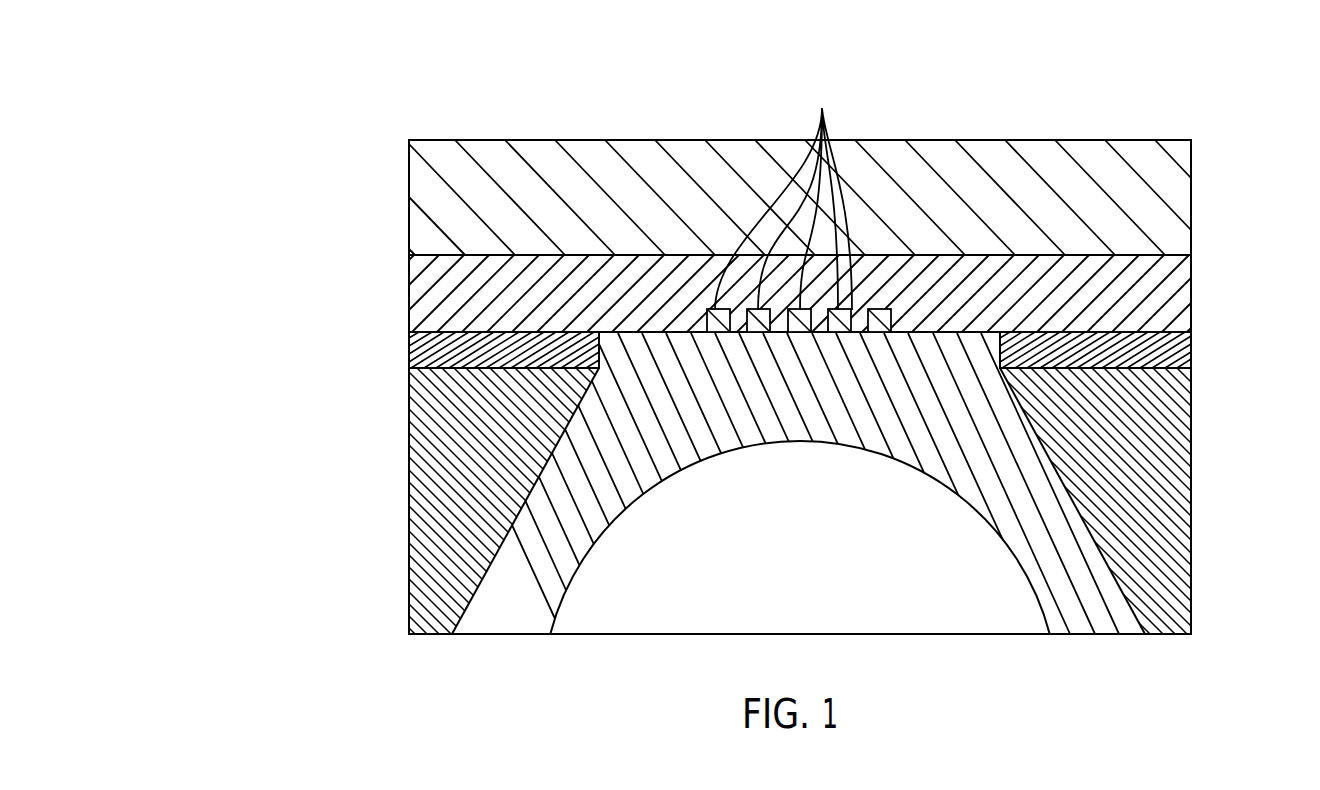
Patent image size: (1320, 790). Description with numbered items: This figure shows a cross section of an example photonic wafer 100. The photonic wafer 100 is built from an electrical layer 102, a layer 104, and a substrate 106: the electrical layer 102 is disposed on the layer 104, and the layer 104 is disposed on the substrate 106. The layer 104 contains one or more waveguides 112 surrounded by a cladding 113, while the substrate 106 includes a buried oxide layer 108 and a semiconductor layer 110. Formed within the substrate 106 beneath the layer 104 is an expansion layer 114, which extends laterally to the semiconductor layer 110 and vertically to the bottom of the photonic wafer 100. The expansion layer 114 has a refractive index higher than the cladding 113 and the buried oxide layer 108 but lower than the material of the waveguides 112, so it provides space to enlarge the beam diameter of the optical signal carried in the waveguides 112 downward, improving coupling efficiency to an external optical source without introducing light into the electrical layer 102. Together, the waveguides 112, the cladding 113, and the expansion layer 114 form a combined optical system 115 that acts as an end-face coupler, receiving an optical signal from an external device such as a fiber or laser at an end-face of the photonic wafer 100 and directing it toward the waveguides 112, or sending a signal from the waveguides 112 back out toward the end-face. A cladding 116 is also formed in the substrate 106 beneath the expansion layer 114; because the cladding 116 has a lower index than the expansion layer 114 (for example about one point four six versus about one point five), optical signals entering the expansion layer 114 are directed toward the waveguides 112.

The photonic wafer 100 is at (841, 38).
The electrical layer 102 is at (1191, 201).
The layer 104 is at (1191, 307).
The substrate 106 is at (367, 332).
The buried oxide layer 108 is at (1191, 351).
The semiconductor layer 110 is at (1191, 500).
The waveguides 112 is at (783, 196).
The cladding 113 is at (1167, 267).
The expansion layer 114 is at (1088, 622).
The combined optical system 115 is at (252, 256).
The cladding 116 is at (949, 617).